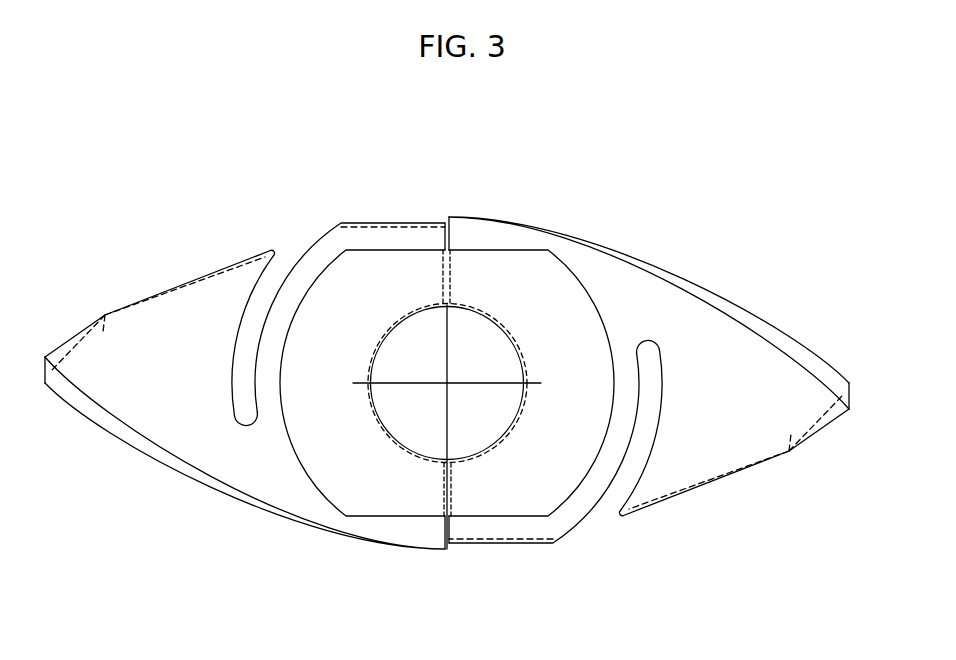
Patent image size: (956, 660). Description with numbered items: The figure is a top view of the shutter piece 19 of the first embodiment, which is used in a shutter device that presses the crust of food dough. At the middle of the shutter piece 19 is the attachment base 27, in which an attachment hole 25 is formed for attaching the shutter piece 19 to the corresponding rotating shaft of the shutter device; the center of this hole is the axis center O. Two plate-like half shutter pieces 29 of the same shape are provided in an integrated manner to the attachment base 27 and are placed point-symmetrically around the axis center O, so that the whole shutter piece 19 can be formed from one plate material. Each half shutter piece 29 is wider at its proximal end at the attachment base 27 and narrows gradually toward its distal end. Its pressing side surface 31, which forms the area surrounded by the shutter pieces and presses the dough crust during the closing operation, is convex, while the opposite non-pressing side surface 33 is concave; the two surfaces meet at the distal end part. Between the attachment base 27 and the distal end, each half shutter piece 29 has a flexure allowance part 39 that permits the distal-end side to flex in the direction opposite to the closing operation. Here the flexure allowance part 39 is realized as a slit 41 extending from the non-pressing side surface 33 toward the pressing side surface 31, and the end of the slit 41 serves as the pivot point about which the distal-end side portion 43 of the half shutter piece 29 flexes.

The shutter piece 19 is at (530, 213).
The attachment hole 25 is at (390, 346).
The attachment base 27 is at (485, 258).
The half shutter piece 29 is at (633, 270).
The pressing side surface 31 is at (75, 405).
The non-pressing side surface 33 is at (108, 313).
The flexure allowance part 39 is at (297, 247).
The slit 41 is at (246, 347).
The distal-end side portion 43 is at (131, 378).
The axis center O is at (447, 383).